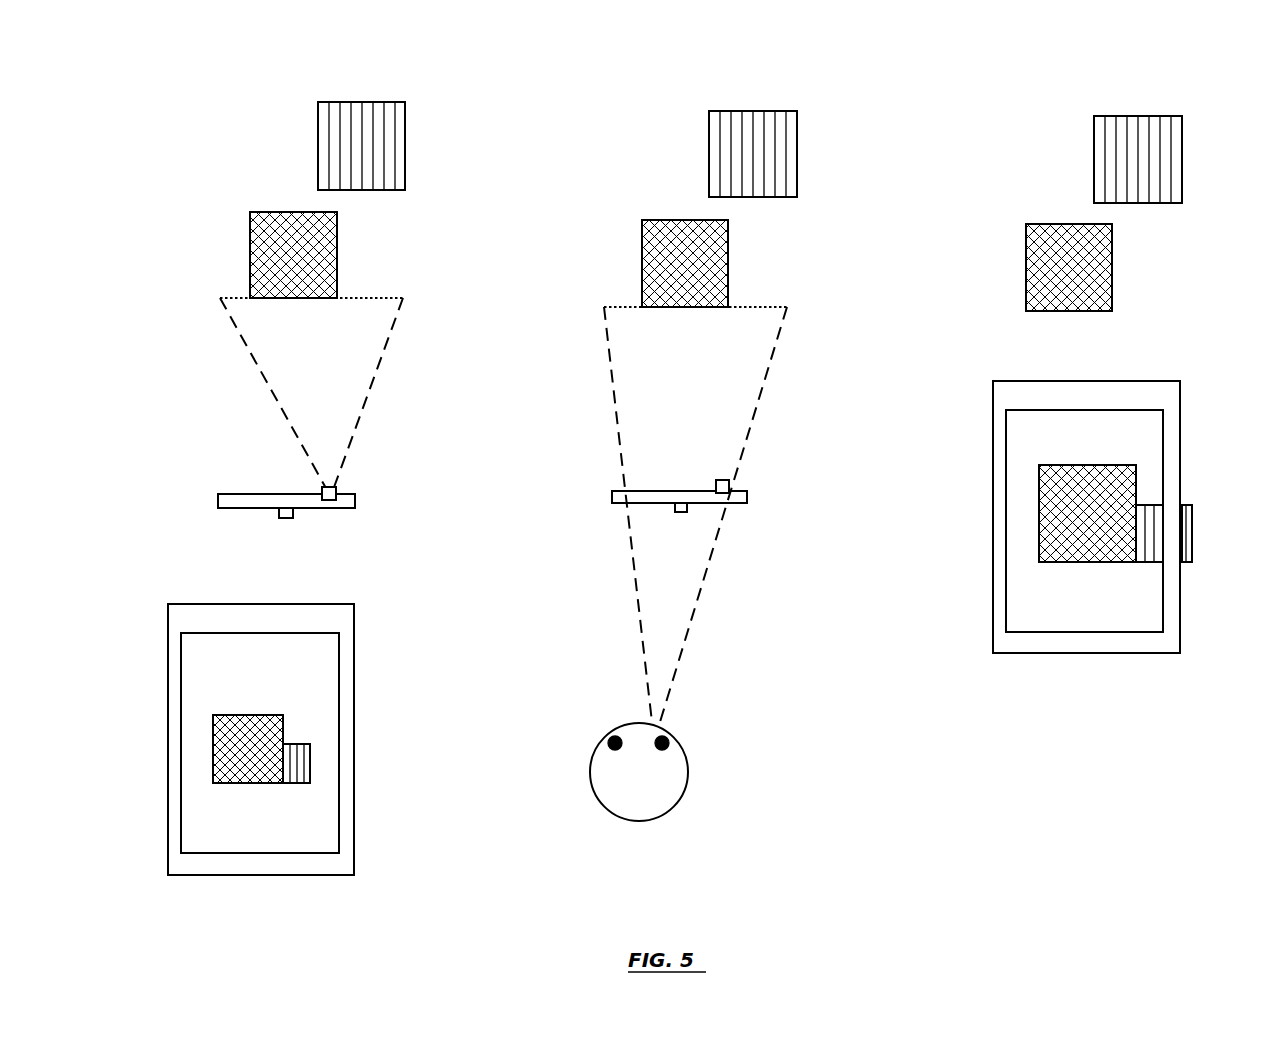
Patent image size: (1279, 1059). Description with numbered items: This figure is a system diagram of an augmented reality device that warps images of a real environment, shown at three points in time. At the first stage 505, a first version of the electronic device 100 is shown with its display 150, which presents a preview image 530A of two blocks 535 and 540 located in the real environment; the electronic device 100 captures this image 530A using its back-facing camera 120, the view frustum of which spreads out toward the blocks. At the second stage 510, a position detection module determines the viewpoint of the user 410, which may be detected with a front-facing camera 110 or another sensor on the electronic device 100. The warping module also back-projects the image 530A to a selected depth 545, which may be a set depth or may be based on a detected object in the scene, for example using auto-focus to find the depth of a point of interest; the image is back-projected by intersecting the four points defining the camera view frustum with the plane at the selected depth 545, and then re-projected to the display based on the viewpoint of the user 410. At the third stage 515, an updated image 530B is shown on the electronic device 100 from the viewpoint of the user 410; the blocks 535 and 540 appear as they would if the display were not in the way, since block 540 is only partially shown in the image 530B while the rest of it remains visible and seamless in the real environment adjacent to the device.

The first point in time 505 is at (212, 130).
The second point in time 510 is at (605, 130).
The third point in time 515 is at (1022, 147).
The block 540 is at (362, 102).
The block 535 is at (270, 212).
The selected depth 545 is at (372, 297).
The electronic device 100 is at (353, 500).
The back-facing camera 120 is at (332, 488).
The front-facing camera 110 is at (287, 520).
The display 150 is at (327, 692).
The preview image 530A is at (203, 743).
The updated image 530B is at (1025, 505).
The user 410 is at (685, 758).